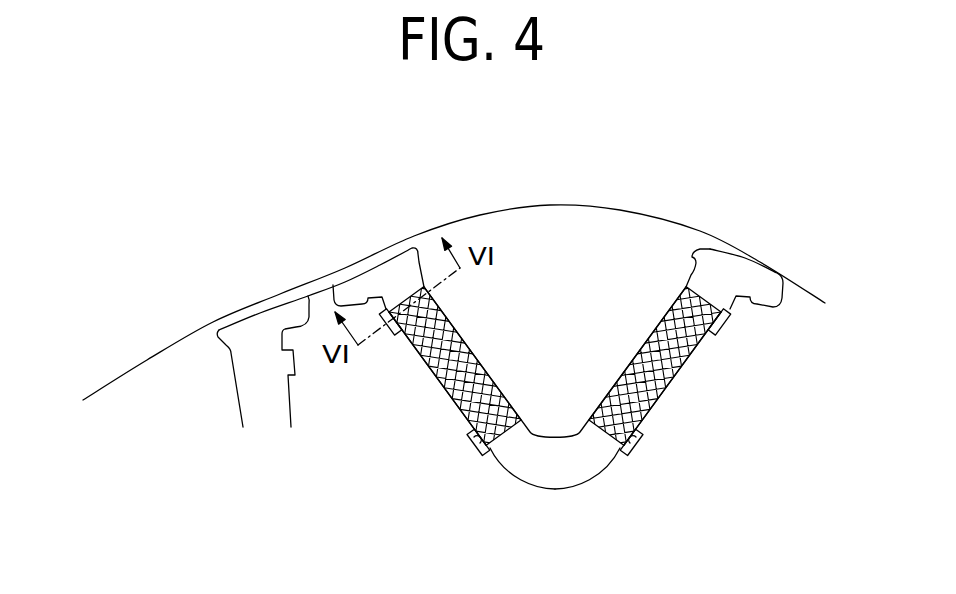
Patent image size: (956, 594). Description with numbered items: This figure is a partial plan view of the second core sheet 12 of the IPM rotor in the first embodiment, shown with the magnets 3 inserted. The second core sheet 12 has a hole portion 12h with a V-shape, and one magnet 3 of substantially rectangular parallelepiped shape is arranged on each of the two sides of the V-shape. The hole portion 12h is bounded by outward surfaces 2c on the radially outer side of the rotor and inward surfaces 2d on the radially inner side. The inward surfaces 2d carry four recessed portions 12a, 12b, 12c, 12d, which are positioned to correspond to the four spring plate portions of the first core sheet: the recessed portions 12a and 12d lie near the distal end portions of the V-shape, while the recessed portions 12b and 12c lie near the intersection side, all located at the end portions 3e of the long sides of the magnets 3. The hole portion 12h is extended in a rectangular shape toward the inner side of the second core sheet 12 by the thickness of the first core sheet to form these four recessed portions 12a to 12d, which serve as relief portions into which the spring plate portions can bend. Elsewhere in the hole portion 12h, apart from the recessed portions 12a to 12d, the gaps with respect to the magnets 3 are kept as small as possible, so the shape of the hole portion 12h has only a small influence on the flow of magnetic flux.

The second core sheet 12 is at (77, 113).
The recessed portion 12a is at (398, 330).
The recessed portion 12b is at (482, 458).
The recessed portion 12c is at (634, 455).
The recessed portion 12d is at (722, 333).
The hole portion 12h is at (708, 270).
The outward surface 2c is at (478, 355).
The inward surface 2d is at (434, 373).
The magnet 3 is at (498, 386).
The end portion 3e is at (395, 307).